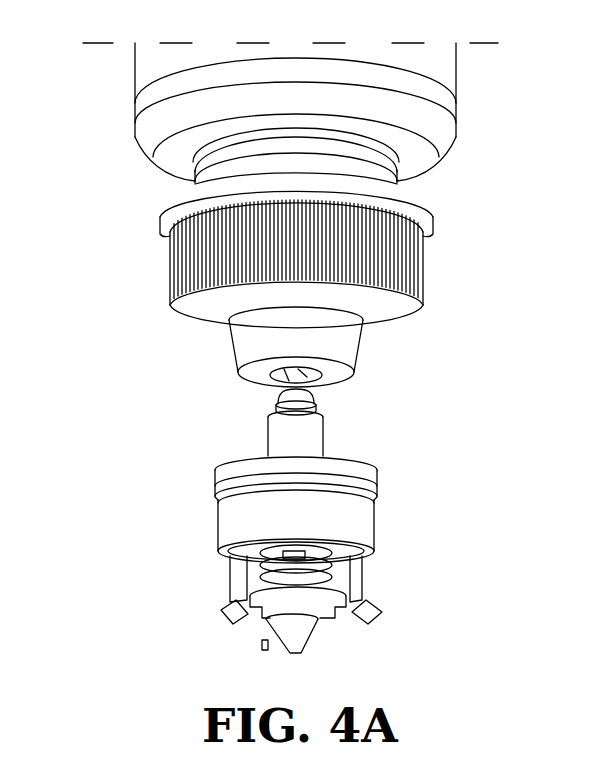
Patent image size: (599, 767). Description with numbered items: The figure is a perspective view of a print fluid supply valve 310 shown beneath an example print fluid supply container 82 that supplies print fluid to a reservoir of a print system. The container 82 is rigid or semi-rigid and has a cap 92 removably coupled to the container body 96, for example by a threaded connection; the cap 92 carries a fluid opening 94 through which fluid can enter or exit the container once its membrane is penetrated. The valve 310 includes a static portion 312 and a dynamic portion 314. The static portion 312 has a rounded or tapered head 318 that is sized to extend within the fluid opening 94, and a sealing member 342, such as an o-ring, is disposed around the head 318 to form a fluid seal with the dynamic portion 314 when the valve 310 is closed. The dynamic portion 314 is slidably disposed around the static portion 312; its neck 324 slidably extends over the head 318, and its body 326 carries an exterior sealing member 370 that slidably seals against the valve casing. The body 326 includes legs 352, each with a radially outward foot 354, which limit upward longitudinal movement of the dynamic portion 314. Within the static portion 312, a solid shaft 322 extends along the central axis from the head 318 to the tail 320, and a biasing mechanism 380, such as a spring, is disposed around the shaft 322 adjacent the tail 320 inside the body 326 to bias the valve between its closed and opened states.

The print fluid supply container 82 is at (297, 113).
The container body 96 is at (130, 137).
The cap 92 is at (422, 270).
The fluid opening 94 is at (345, 378).
The static portion 312 is at (286, 420).
The head 318 is at (315, 398).
The sealing member 342 is at (322, 416).
The dynamic portion 314 is at (282, 437).
The neck 324 is at (328, 440).
The print fluid supply valve 310 is at (347, 546).
The sealing member 370 is at (377, 497).
The body 326 is at (375, 528).
The biasing mechanism 380 is at (325, 567).
The leg 352 is at (230, 582).
The foot 354 is at (222, 617).
The shaft 322 is at (250, 560).
The tail 320 is at (306, 632).